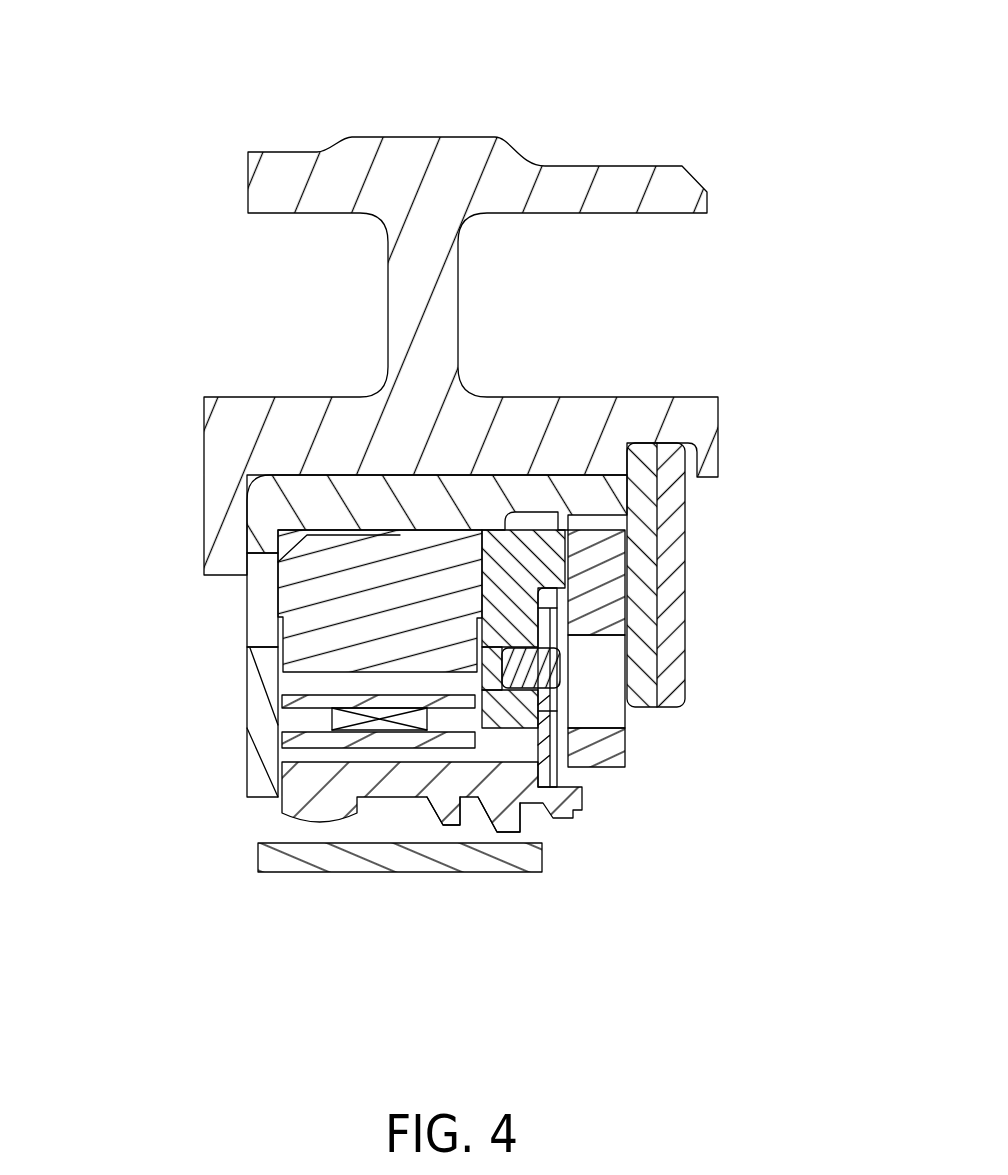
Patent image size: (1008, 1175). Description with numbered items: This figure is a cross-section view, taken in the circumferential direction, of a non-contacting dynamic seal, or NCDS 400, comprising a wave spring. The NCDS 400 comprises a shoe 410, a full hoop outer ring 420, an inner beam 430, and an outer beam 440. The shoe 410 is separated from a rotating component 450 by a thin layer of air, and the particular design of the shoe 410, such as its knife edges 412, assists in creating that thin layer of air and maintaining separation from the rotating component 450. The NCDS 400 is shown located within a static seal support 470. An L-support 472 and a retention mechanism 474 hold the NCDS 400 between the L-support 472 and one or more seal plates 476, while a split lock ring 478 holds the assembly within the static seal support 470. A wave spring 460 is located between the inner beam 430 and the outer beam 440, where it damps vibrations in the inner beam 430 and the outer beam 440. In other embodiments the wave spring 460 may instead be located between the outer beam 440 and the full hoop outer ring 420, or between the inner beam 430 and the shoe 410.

The NCDS 400 is at (138, 198).
The shoe 410 is at (282, 815).
The knife edges 412 is at (522, 820).
The full hoop outer ring 420 is at (280, 662).
The inner beam 430 is at (280, 743).
The outer beam 440 is at (280, 703).
The rotating component 450 is at (358, 872).
The wave spring 460 is at (398, 735).
The static seal support 470 is at (403, 137).
The L-support 472 is at (247, 585).
The retention mechanism 474 is at (627, 743).
The seal plates 476 is at (558, 775).
The split lock ring 478 is at (687, 615).